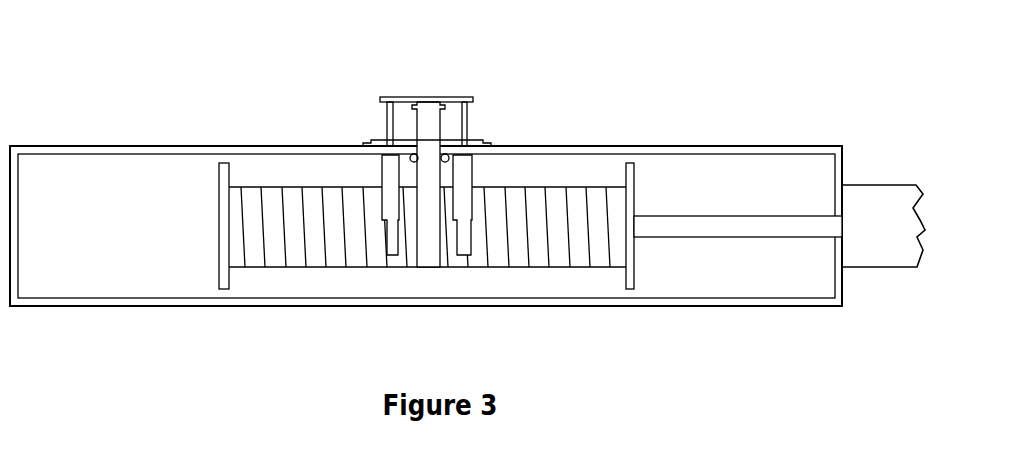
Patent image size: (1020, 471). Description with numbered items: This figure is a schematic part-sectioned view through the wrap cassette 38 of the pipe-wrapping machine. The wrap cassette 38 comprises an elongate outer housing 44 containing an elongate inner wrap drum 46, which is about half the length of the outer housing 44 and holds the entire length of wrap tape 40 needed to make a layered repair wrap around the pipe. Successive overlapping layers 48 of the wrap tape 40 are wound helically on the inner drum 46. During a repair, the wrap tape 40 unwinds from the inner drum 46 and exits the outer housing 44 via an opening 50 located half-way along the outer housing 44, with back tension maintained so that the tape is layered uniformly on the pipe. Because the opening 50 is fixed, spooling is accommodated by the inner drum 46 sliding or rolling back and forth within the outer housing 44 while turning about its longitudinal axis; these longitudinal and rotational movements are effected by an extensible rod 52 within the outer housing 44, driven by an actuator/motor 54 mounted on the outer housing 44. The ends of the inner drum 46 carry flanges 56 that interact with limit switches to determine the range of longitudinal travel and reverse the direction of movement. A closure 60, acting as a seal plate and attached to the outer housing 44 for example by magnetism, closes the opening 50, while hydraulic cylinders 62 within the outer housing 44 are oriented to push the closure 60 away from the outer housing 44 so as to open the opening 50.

The wrap cassette 38 is at (162, 83).
The wrap tape 40 is at (427, 113).
The outer housing 44 is at (709, 150).
The inner wrap drum 46 is at (210, 227).
The overlapping layers 48 is at (559, 207).
The opening 50 is at (415, 142).
The extensible rod 52 is at (742, 227).
The actuator/motor 54 is at (883, 198).
The flanges 56 is at (224, 265).
The closure 60 is at (403, 98).
The hydraulic cylinders 62 is at (393, 183).